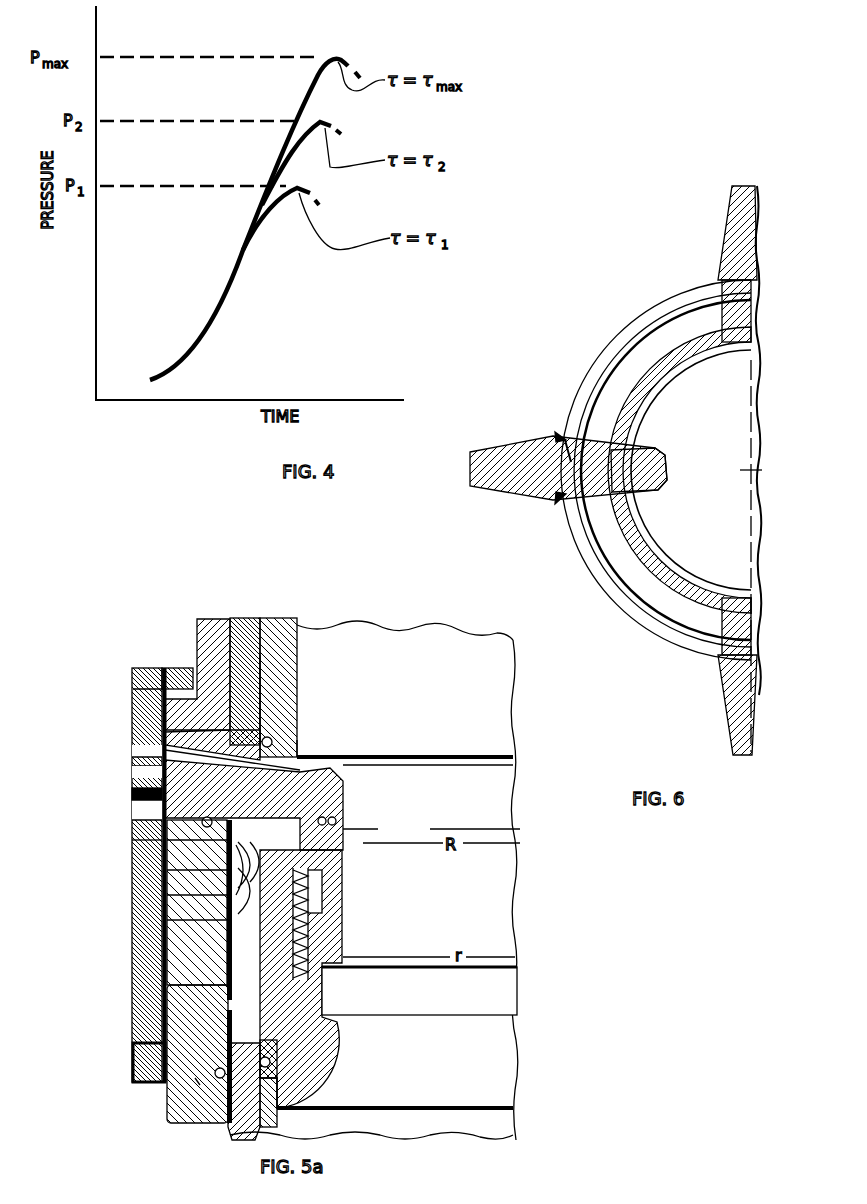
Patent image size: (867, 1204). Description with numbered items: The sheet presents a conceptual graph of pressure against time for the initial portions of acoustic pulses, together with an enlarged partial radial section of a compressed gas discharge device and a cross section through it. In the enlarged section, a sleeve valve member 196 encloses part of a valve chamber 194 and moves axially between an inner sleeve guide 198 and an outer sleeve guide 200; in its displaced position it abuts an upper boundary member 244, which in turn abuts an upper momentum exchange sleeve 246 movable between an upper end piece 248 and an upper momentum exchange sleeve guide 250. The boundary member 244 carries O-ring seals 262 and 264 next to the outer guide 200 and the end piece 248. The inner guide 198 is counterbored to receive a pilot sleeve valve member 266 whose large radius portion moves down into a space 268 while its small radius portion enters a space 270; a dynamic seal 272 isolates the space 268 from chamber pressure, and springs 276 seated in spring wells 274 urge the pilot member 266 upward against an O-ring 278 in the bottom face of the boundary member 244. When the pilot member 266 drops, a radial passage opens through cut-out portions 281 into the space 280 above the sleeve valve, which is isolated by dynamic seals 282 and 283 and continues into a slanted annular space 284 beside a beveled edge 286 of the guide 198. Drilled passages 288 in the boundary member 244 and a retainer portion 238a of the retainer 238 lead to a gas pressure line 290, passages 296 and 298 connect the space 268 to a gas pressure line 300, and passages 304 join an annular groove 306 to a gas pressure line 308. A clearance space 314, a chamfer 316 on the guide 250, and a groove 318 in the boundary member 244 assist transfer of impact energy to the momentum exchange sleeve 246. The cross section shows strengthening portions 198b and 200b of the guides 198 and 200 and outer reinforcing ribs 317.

In FIG. 5a, the valve chamber 194 is at (483, 893).
In FIG. 6, the sleeve valve member 196 is at (668, 380).
In FIG. 5a, the sleeve valve member 196 is at (228, 1133).
In FIG. 5a, the inner sleeve guide 198 is at (307, 1055).
In FIG. 6, the portion of inner sleeve valve guide 198b is at (655, 463).
In FIG. 6, the outer sleeve guide 200 is at (592, 372).
In FIG. 5a, the outer sleeve guide 200 is at (157, 998).
In FIG. 6, the portion of outer sleeve valve guide 200b is at (565, 422).
In FIG. 6, the retainer 238 is at (605, 589).
In FIG. 5a, the retainer portion 238a is at (142, 1052).
In FIG. 5a, the upper boundary member 244 is at (343, 782).
In FIG. 5a, the upper momentum exchange sleeve 246 is at (275, 677).
In FIG. 5a, the upper end piece 248 is at (297, 660).
In FIG. 5a, the upper momentum exchange sleeve guide 250 is at (222, 652).
In FIG. 5a, the O-ring seal 262 is at (135, 838).
In FIG. 5a, the O-ring seal 264 is at (297, 745).
In FIG. 5a, the pilot sleeve valve member 266 is at (333, 893).
In FIG. 5a, the space 268 is at (323, 877).
In FIG. 5a, the space 270 is at (360, 993).
In FIG. 5a, the dynamic seal 272 is at (320, 930).
In FIG. 5a, the spring well 274 is at (245, 997).
In FIG. 5a, the spring 276 is at (295, 915).
In FIG. 5a, the O-ring 278 is at (343, 818).
In FIG. 5a, the space 280 is at (240, 958).
In FIG. 5a, the cut-out portion 281 is at (230, 898).
In FIG. 5a, the dynamic seal 282 is at (307, 1053).
In FIG. 5a, the dynamic seal 283 is at (195, 1078).
In FIG. 5a, the slanted annular space 284 is at (232, 846).
In FIG. 5a, the beveled edge 286 is at (228, 873).
In FIG. 5a, the drilled passage 288 is at (132, 797).
In FIG. 5a, the gas pressure line 290 is at (131, 815).
In FIG. 5a, the drilled passage 296 is at (132, 768).
In FIG. 5a, the drilled passage 298 is at (232, 923).
In FIG. 5a, the gas pressure line 300 is at (131, 785).
In FIG. 5a, the passage 304 is at (137, 745).
In FIG. 5a, the annular groove 306 is at (431, 830).
In FIG. 5a, the gas pressure line 308 is at (131, 749).
In FIG. 5a, the clearance space 314 is at (297, 757).
In FIG. 5a, the chamfer 316 is at (212, 722).
In FIG. 6, the outer reinforcing rib 317 is at (533, 482).
In FIG. 5a, the groove 318 is at (180, 725).